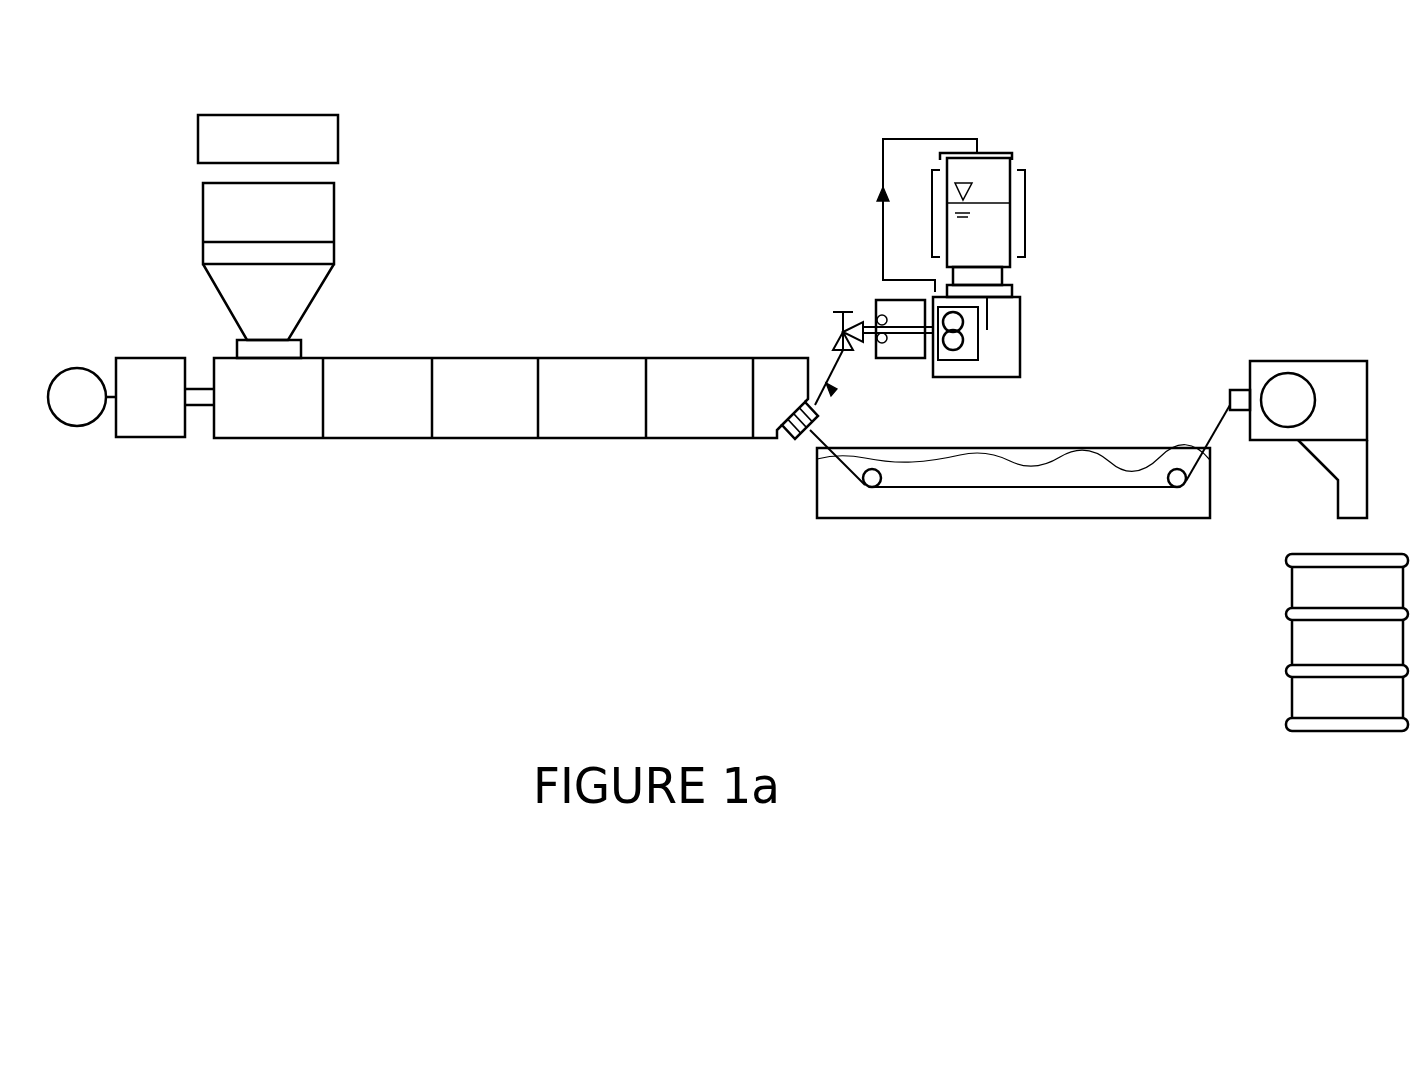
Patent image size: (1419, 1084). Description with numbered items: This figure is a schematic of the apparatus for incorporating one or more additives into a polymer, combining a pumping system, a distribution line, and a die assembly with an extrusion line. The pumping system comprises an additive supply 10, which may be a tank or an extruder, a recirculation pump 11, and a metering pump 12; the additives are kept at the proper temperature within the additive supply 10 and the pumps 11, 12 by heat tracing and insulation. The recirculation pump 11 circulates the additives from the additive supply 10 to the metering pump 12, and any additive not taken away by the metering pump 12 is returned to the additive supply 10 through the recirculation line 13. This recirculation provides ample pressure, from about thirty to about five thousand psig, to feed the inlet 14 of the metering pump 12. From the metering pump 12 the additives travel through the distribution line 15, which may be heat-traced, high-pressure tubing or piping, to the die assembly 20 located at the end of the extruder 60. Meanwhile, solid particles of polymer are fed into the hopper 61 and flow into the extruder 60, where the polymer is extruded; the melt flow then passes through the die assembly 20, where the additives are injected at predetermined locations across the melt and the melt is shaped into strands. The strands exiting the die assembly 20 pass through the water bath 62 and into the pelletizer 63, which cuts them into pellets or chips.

The additive supply 10 is at (1007, 180).
The recirculation pump 11 is at (980, 330).
The metering pump 12 is at (880, 360).
The recirculation line 13 is at (877, 210).
The inlet 14 is at (932, 333).
The distribution line 15 is at (840, 377).
The die assembly 20 is at (788, 440).
The extruder 60 is at (498, 440).
The hopper 61 is at (335, 223).
The water bath 62 is at (1013, 520).
The pelletizer 63 is at (1307, 360).